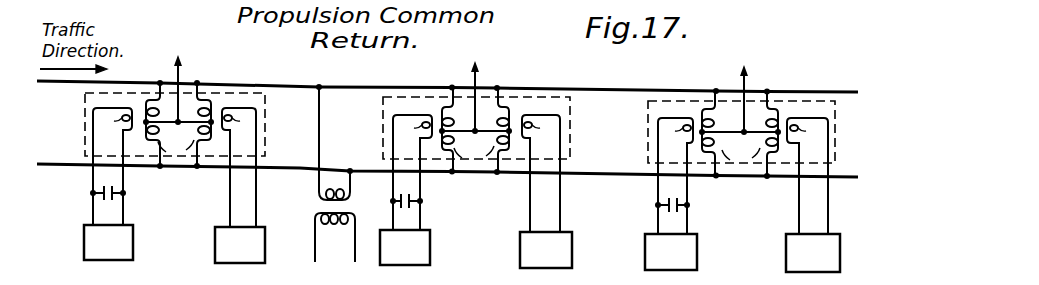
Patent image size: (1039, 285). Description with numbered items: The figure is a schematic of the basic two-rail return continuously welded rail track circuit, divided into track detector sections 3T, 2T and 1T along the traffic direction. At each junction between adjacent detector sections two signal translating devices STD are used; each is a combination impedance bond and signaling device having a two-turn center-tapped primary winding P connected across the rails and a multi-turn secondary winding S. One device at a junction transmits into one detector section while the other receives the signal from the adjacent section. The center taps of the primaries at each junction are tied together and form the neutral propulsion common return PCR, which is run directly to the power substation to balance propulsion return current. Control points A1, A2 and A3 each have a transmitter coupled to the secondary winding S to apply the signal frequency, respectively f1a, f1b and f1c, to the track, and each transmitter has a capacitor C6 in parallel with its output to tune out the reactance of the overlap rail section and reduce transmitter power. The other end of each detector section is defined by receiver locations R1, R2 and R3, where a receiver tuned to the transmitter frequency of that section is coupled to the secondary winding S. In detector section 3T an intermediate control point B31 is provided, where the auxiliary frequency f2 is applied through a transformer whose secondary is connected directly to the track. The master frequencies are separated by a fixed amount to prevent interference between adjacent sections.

The control point A1 is at (151, 115).
The receiver location R3 is at (199, 115).
The control point A3 is at (449, 120).
The receiver location R2 is at (502, 120).
The control point A2 is at (707, 123).
The receiver location R1 is at (774, 123).
The intermediate control point B31 is at (317, 78).
The propulsion common return PCR is at (462, 86).
The signal translating device STD is at (89, 142).
The secondary winding S is at (460, 171).
The primary winding P is at (459, 153).
The capacitor C6 is at (119, 191).
The master frequency f1a is at (84, 242).
The master frequency f1b is at (520, 253).
The master frequency f1c is at (215, 249).
The auxiliary frequency f2 is at (335, 174).
The track detector section 3T is at (350, 140).
The track detector section 2T is at (600, 149).
The track detector section 1T is at (853, 161).